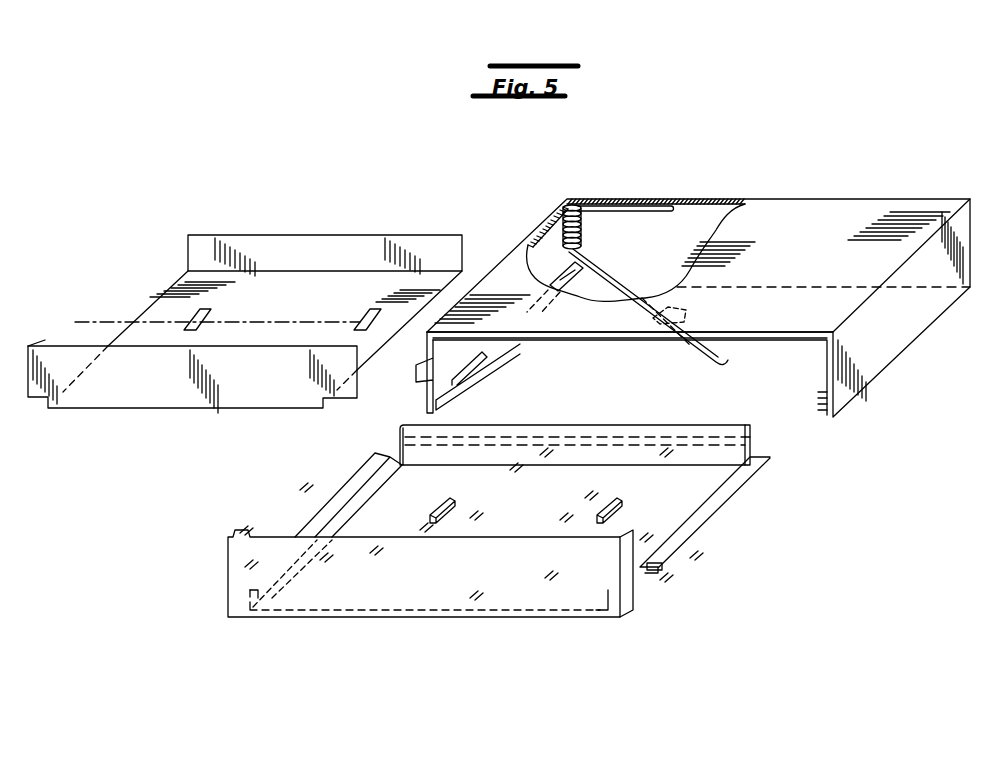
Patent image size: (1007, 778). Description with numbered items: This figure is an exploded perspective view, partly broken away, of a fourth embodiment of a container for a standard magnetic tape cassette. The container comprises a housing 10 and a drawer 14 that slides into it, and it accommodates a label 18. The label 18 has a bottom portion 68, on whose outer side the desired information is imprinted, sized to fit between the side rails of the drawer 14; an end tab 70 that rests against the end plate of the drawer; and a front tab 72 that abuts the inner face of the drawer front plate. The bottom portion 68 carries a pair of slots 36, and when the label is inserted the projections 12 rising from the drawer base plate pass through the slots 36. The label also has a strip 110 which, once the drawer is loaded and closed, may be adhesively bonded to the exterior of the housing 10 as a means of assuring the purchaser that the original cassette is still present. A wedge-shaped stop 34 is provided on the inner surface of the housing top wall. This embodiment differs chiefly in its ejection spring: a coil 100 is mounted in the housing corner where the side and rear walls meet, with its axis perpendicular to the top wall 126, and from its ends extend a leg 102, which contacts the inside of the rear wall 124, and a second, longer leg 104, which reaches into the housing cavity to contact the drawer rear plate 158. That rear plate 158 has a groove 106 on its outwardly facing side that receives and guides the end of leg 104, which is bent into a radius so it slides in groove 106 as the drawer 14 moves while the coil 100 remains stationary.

The housing 10 is at (703, 278).
The projections 12 is at (433, 510).
The drawer 14 is at (529, 502).
The label 18 is at (245, 315).
The wedge-shaped stop 34 is at (684, 307).
The slots 36 is at (358, 311).
The bottom portion 68 is at (165, 313).
The end tab 70 is at (358, 245).
The front tab 72 is at (165, 395).
The coil 100 is at (567, 223).
The leg 102 is at (653, 206).
The leg 104 is at (710, 357).
The groove 106 is at (750, 440).
The strip 110 is at (94, 330).
The rear wall 124 is at (700, 232).
The top wall 126 is at (778, 339).
The rear wall of drawer 158 is at (527, 424).